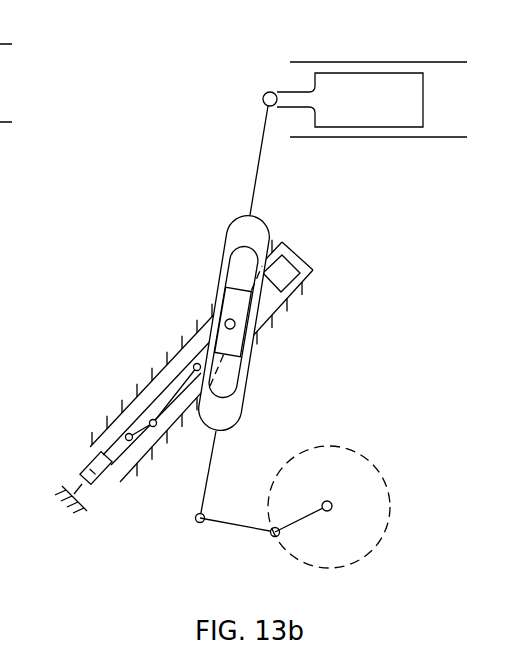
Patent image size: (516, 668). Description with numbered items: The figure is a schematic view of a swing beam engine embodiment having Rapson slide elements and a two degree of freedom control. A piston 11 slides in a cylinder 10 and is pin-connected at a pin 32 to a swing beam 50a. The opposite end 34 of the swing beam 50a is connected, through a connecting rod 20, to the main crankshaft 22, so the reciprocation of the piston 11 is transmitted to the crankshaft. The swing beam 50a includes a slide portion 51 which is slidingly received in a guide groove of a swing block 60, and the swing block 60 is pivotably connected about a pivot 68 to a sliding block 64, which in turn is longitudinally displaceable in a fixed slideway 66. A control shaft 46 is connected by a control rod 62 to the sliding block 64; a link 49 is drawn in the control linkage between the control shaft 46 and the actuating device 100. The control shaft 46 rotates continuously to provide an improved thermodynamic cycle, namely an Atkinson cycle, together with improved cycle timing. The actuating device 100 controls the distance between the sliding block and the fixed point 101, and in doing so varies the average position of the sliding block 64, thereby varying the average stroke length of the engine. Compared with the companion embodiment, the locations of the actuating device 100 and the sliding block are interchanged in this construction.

The cylinder 10 is at (402, 62).
The piston 11 is at (335, 82).
The wrist pin 32 is at (263, 96).
The swing beam 50a is at (257, 183).
The slide portion 51 is at (228, 377).
The swing block 60 is at (229, 287).
The pivot 68 is at (225, 320).
The control rod 62 is at (175, 398).
The sliding block 64 is at (267, 295).
The fixed slideway 66 is at (297, 283).
The control rod 49 is at (137, 430).
The control shaft 46 is at (140, 435).
The actuating device 100 is at (90, 462).
The fixed point 101 is at (85, 513).
The opposite end 34 is at (197, 524).
The connecting rod 20 is at (223, 520).
The main crankshaft 22 is at (308, 512).